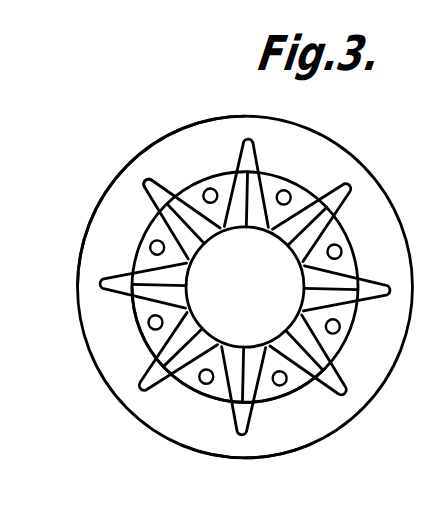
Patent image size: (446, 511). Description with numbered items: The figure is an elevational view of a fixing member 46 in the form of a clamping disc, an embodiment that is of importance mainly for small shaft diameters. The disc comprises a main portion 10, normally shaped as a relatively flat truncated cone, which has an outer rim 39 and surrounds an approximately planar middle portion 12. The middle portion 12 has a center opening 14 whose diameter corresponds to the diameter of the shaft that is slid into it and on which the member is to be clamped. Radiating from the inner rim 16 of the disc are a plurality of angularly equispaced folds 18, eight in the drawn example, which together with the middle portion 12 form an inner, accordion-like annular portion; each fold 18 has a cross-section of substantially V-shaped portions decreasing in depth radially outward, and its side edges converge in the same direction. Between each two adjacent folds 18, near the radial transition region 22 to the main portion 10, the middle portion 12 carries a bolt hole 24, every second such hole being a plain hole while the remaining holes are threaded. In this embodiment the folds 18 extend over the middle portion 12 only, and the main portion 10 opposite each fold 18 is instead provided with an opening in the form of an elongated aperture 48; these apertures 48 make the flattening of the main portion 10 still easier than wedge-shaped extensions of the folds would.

The main portion 10 is at (325, 165).
The middle portion 12 is at (223, 390).
The center opening 14 is at (222, 250).
The inner rim 16 is at (212, 332).
The folds 18 is at (195, 350).
The radial transition region 22 is at (138, 333).
The bolt hole 24 is at (284, 386).
The outer rim 39 is at (228, 459).
The fixing member 46 is at (193, 124).
The elongated aperture 48 is at (147, 182).